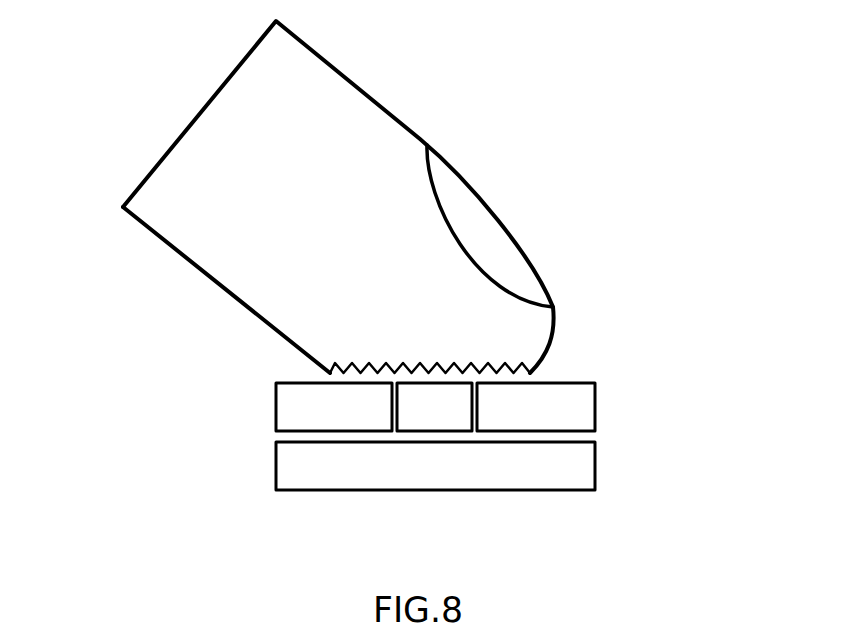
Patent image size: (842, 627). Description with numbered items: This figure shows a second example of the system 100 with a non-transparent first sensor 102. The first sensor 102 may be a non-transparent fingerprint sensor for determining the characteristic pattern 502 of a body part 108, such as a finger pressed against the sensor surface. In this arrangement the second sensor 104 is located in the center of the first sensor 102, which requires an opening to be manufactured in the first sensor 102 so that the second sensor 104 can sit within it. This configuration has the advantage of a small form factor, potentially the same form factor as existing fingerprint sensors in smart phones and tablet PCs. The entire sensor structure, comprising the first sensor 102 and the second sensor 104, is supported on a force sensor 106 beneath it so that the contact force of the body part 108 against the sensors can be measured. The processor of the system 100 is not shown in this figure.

The system 100 is at (133, 442).
The first sensor 102 is at (276, 407).
The second sensor 104 is at (435, 431).
The force sensor 106 is at (595, 468).
The body part 108 is at (400, 111).
The characteristic pattern 502 is at (357, 347).